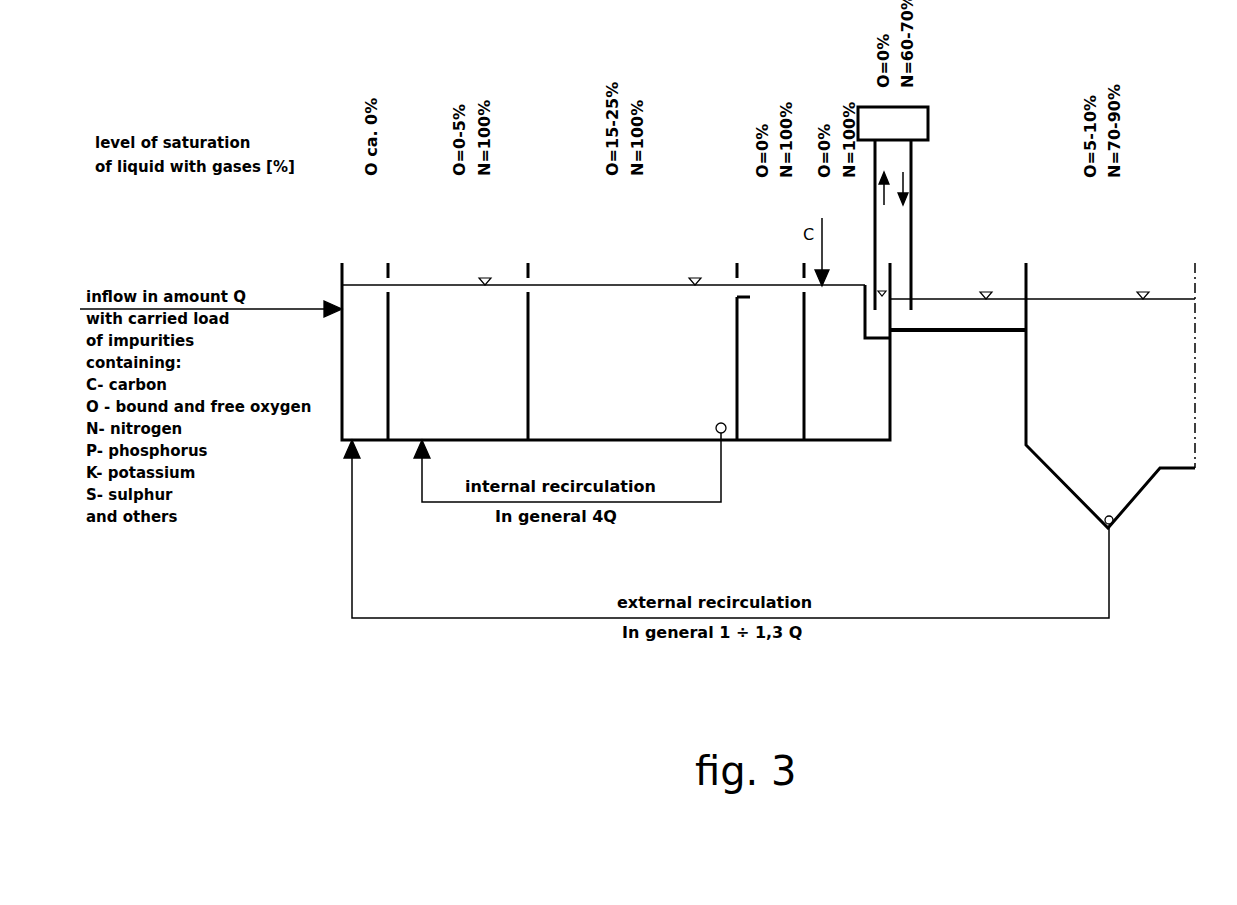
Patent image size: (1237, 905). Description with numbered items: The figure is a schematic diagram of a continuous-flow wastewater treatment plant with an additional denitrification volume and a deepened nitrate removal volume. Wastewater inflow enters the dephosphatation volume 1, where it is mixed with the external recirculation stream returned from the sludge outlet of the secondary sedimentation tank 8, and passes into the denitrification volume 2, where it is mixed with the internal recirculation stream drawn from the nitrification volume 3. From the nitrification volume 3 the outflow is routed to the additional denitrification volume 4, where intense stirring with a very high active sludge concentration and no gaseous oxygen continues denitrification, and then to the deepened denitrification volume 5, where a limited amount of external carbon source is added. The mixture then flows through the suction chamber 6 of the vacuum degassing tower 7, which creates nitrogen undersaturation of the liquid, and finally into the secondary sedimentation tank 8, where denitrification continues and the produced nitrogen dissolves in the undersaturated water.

The dephosphatation volume 1 is at (365, 351).
The denitrification volume 2 is at (458, 351).
The nitrification volume 3 is at (639, 351).
The additional denitrification volume 4 is at (771, 351).
The deepened denitrification volume 5 is at (847, 351).
The suction chamber 6 is at (890, 330).
The vacuum degassing tower 7 is at (912, 107).
The secondary sedimentation tank 8 is at (1110, 395).